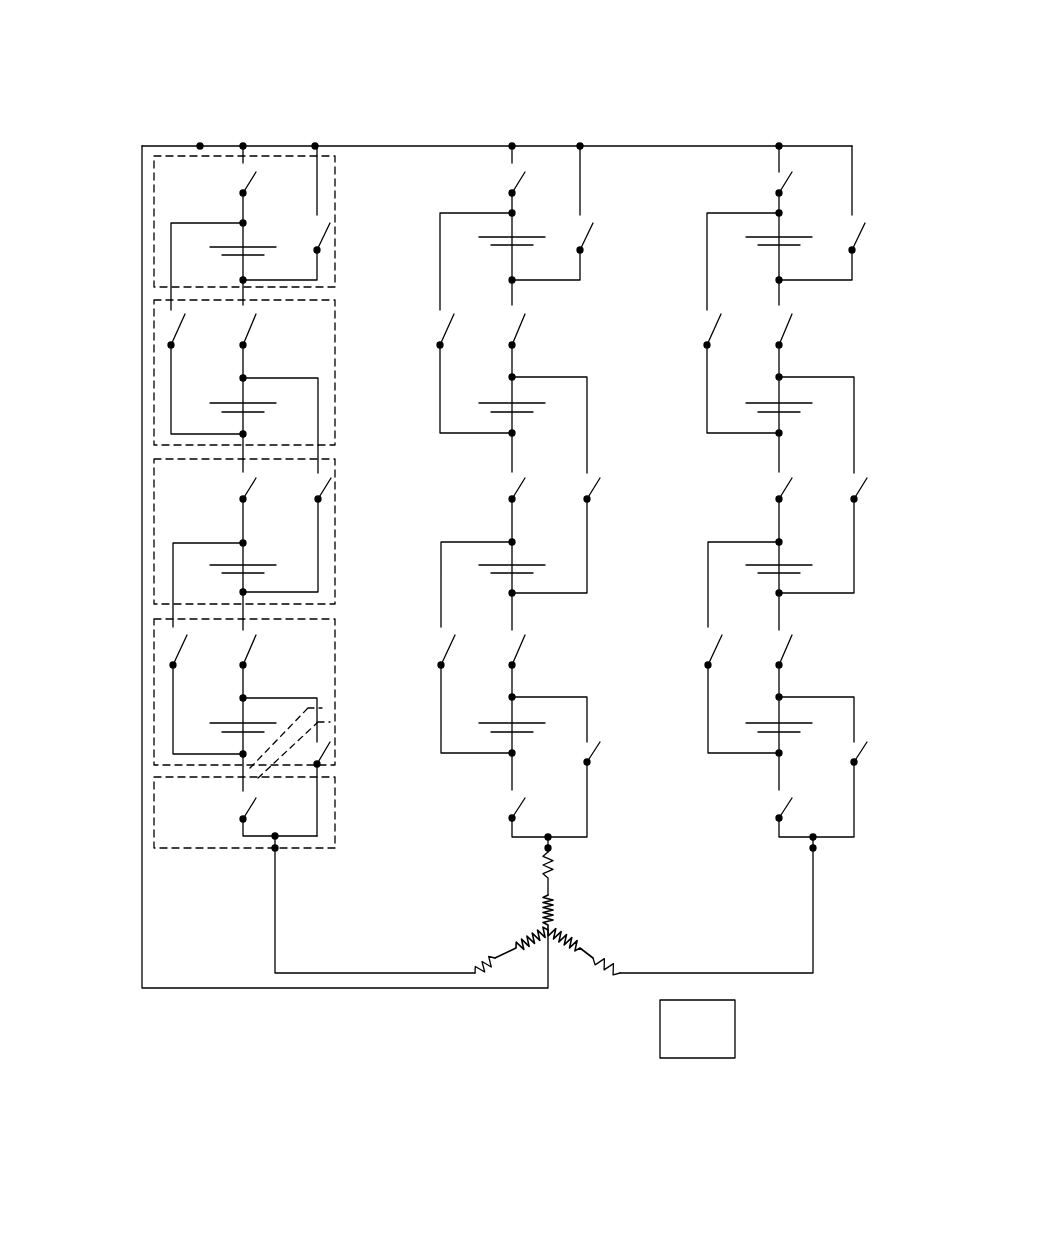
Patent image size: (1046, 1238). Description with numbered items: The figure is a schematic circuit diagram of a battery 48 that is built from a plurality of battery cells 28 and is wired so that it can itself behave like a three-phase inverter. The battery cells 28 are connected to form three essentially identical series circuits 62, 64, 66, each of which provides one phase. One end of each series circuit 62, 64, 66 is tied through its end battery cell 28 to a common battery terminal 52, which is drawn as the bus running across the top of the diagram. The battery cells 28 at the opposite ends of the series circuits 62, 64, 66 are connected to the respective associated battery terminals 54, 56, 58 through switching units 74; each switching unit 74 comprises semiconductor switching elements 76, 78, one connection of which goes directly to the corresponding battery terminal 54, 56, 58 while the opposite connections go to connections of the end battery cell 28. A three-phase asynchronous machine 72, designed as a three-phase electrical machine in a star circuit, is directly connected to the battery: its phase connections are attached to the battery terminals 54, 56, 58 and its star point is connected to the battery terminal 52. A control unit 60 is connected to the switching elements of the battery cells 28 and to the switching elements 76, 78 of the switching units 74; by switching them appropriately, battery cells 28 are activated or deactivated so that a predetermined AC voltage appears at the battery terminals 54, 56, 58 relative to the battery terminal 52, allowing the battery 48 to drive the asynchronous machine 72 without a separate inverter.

The battery 48 is at (427, 118).
The battery terminal 52 is at (200, 146).
The battery cell 28 is at (154, 215).
The series circuit 62 is at (125, 682).
The series circuit 64 is at (605, 515).
The series circuit 66 is at (882, 475).
The switching unit 74 is at (154, 837).
The semiconductor switching element 76 is at (317, 764).
The semiconductor switching element 78 is at (249, 805).
The battery terminal 54 is at (275, 848).
The battery terminal 56 is at (540, 850).
The battery terminal 58 is at (810, 853).
The three-phase asynchronous machine 72 is at (555, 960).
The control unit 60 is at (735, 1050).